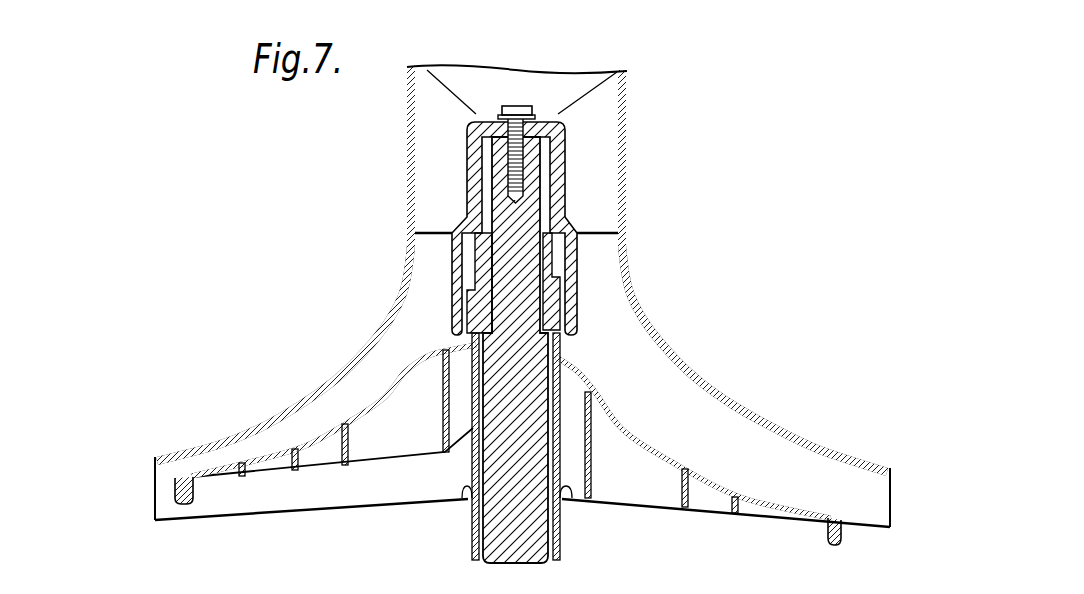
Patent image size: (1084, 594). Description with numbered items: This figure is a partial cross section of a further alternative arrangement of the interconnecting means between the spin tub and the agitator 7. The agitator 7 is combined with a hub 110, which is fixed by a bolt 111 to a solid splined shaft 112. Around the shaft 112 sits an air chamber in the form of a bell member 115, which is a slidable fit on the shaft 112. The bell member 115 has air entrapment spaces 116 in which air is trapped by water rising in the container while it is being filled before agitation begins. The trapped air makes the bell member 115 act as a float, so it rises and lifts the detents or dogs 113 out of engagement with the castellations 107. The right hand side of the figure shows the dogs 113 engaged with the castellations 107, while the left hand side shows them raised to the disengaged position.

The agitator 7 is at (590, 112).
The castellations 107 is at (333, 541).
The hub 110 is at (567, 186).
The bolt 111 is at (508, 107).
The solid splined shaft 112 is at (507, 178).
The detents or dogs 113 is at (185, 473).
The bell member 115 is at (270, 467).
The air entrapment spaces 116 is at (415, 438).